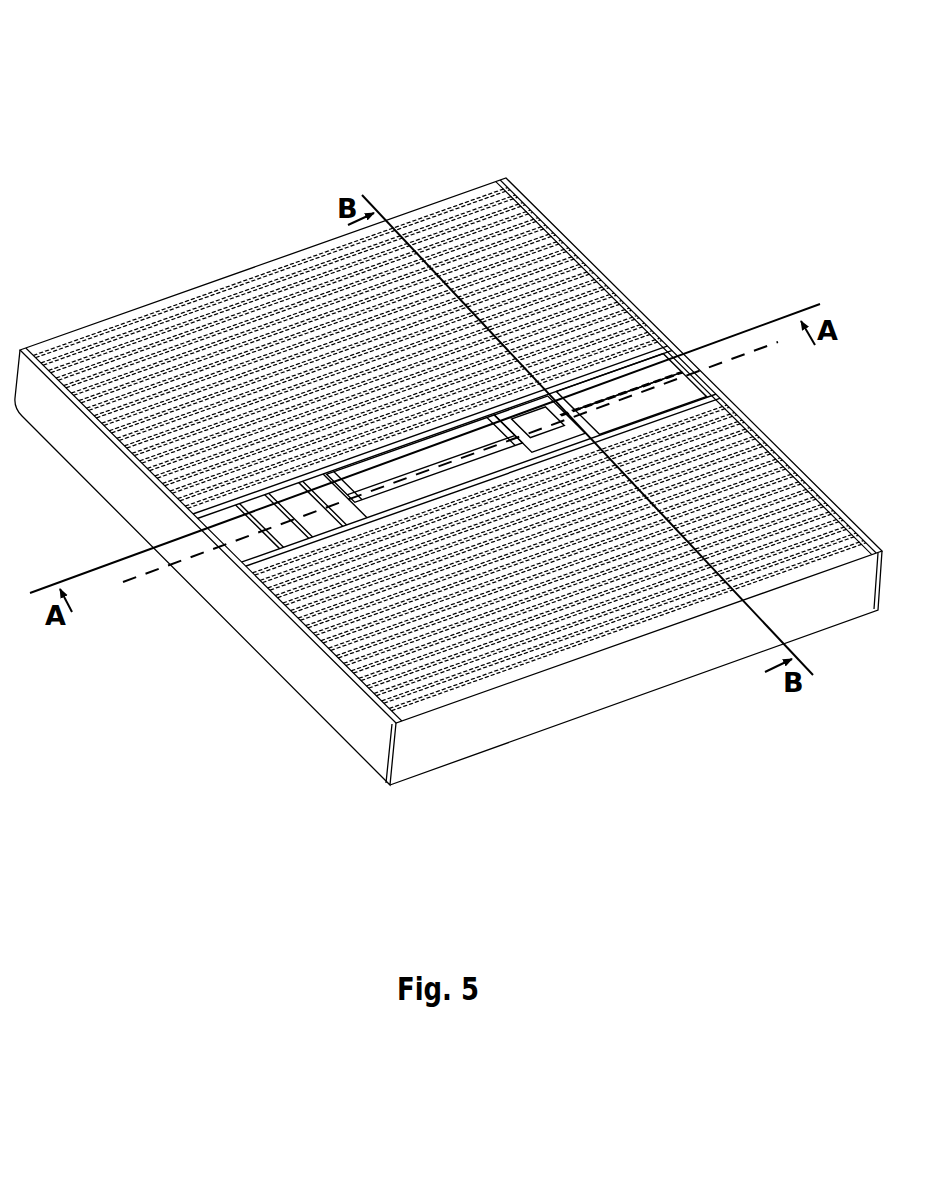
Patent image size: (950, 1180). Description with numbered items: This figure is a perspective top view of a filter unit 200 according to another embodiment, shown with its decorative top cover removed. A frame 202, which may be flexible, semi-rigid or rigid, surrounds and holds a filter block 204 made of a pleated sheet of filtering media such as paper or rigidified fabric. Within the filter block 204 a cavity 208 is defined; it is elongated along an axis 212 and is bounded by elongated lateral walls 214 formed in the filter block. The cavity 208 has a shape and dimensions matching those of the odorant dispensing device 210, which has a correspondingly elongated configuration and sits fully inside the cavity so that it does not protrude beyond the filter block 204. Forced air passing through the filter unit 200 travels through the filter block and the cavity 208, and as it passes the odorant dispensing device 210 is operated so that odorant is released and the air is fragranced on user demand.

The filter unit 200 is at (138, 95).
The frame 202 is at (598, 270).
The filter block 204 is at (487, 222).
The cavity 208 is at (315, 461).
The odorant dispensing device 210 is at (644, 356).
The axis 212 is at (742, 354).
The elongated lateral walls 214 is at (365, 466).